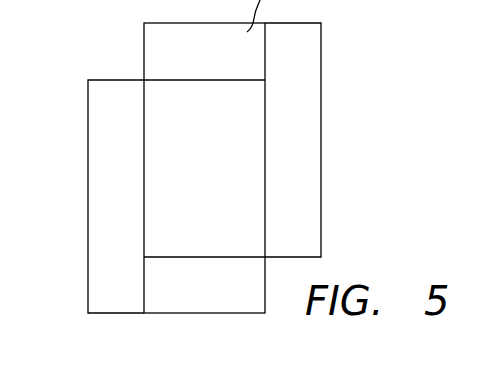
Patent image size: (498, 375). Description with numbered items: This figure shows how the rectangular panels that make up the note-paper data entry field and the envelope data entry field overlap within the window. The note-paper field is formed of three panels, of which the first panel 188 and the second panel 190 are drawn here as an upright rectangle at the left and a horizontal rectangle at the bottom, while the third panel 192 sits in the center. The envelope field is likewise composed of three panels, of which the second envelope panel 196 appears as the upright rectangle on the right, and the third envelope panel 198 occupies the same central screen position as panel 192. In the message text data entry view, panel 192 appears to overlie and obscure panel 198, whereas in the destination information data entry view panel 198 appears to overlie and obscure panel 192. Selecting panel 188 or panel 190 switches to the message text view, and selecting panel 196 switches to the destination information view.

The rectangular panel 188 is at (97, 157).
The rectangular panel 190 is at (232, 302).
The rectangular panel 192 is at (157, 226).
The rectangular panel 196 is at (308, 157).
The rectangular panel 198 is at (250, 132).